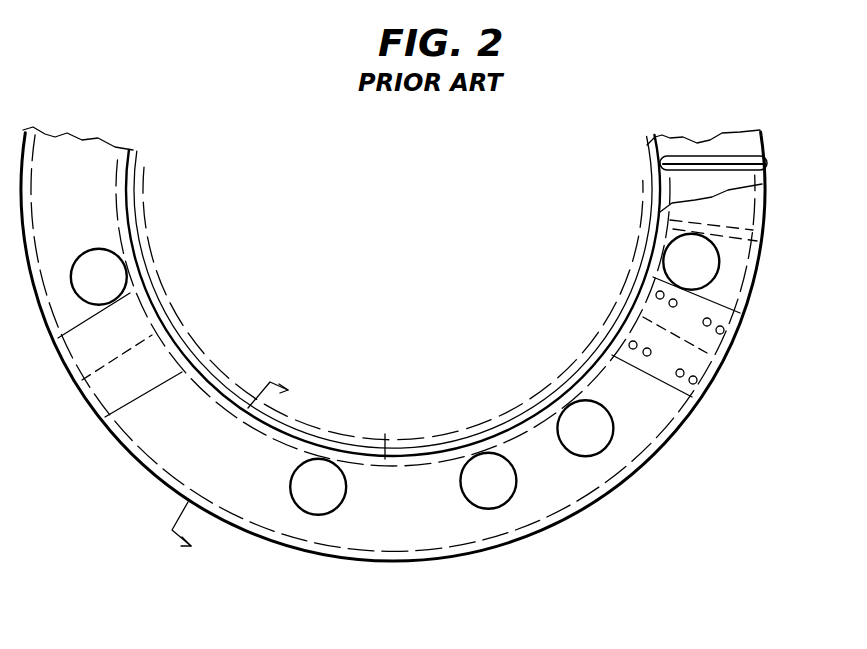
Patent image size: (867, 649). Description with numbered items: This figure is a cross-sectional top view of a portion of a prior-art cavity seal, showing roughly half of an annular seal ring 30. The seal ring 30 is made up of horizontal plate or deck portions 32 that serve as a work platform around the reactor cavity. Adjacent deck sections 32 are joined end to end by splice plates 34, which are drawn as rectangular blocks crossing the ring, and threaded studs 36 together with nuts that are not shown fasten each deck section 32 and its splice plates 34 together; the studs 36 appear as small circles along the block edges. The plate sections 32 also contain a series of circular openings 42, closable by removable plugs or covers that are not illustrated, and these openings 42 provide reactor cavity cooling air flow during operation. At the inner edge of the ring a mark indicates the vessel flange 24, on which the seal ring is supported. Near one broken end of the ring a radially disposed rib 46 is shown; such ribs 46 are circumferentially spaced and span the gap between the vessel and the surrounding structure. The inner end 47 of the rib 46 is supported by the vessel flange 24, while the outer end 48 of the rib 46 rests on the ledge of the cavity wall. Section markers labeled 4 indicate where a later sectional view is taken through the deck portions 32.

The annular seal ring 30 is at (224, 236).
The deck portion 32 is at (100, 221).
The splice plate 34 is at (152, 358).
The threaded stud 36 is at (642, 350).
The opening 42 is at (330, 513).
The vessel flange 24 is at (388, 433).
The section line 4 is at (243, 476).
The radially disposed rib 46 is at (710, 140).
The inner end of rib 47 is at (661, 164).
The outer end of rib 48 is at (767, 165).